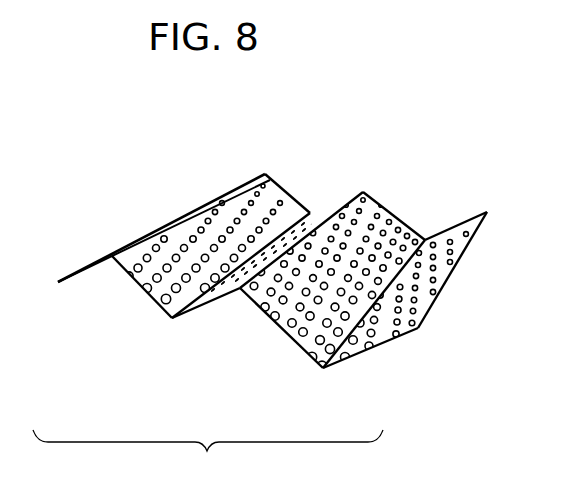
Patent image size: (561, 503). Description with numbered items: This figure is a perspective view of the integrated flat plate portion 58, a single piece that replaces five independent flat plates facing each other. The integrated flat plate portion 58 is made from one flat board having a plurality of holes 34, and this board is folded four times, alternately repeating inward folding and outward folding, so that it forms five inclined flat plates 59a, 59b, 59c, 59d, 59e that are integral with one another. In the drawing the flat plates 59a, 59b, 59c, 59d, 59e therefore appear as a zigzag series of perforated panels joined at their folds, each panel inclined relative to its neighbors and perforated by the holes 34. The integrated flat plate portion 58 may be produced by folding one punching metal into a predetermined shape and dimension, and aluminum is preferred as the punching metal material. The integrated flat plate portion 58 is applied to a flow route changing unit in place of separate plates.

The integrated flat plate portion 58 is at (208, 458).
The flat plate 59a is at (363, 357).
The flat plate 59b is at (277, 323).
The flat plate 59c is at (203, 297).
The flat plate 59d is at (148, 296).
The flat plate 59e is at (83, 272).
The holes 34 is at (432, 250).